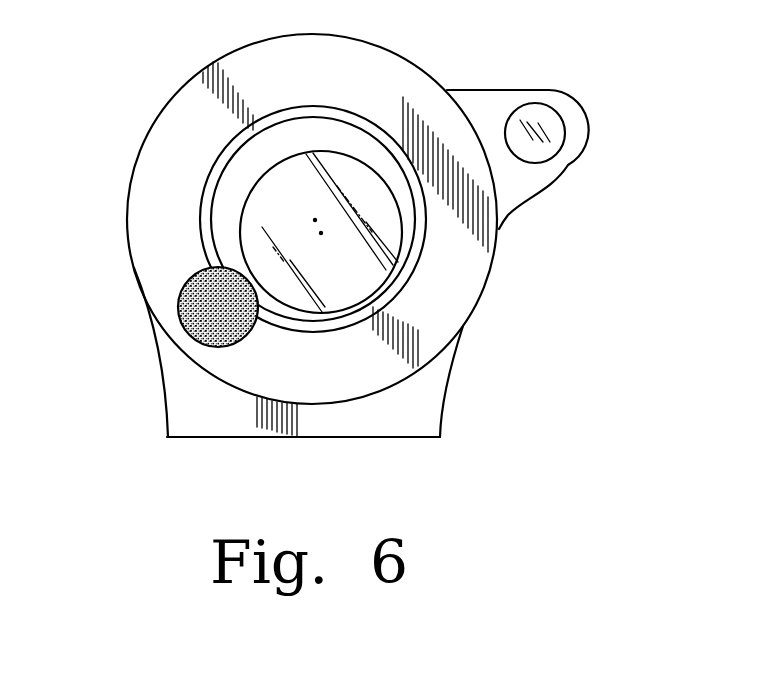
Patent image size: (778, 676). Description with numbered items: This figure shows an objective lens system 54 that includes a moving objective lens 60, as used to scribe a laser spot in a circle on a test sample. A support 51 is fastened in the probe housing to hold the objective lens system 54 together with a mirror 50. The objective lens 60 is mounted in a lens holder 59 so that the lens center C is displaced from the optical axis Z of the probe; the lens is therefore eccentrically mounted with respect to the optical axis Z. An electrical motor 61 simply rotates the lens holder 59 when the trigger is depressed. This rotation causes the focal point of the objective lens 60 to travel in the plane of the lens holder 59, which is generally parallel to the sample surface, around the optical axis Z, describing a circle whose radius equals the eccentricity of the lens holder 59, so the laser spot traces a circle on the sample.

The mirror 50 is at (552, 120).
The support 51 is at (417, 82).
The objective lens system 54 is at (317, 108).
The lens holder 59 is at (227, 183).
The objective lens 60 is at (398, 285).
The motor 61 is at (180, 310).
The optical axis Z is at (305, 217).
The lens center C is at (327, 243).